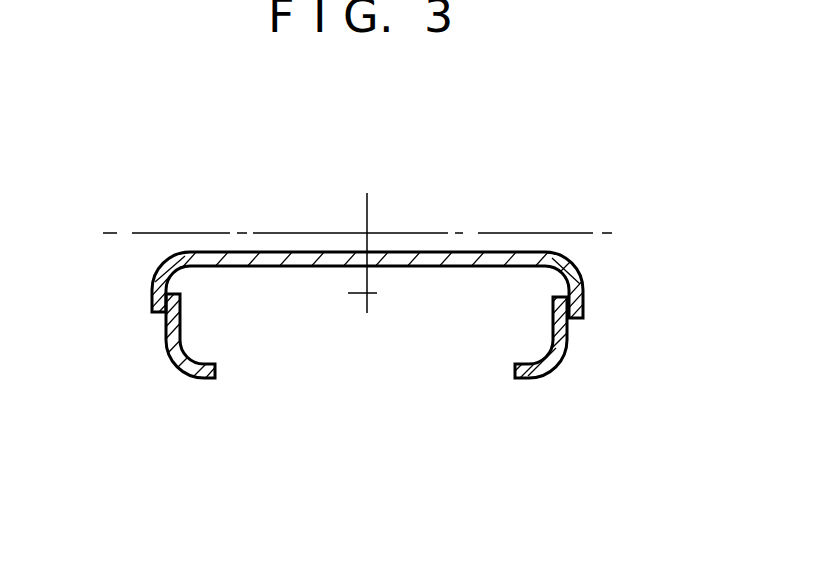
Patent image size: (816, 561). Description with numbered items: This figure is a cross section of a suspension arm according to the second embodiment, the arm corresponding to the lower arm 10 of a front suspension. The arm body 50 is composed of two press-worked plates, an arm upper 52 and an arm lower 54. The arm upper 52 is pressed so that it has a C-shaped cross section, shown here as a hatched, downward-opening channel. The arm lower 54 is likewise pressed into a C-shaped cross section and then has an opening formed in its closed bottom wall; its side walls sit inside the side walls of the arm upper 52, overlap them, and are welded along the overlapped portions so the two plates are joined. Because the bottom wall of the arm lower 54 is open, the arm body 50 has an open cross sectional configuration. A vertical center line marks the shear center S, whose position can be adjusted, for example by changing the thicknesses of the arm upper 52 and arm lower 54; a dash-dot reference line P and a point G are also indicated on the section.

The lower arm 10 is at (410, 360).
The arm body 50 is at (441, 316).
The arm upper 52 is at (579, 278).
The arm lower 54 is at (570, 332).
The reference plane P is at (505, 233).
The shear center S is at (366, 234).
The center of gravity G is at (368, 293).